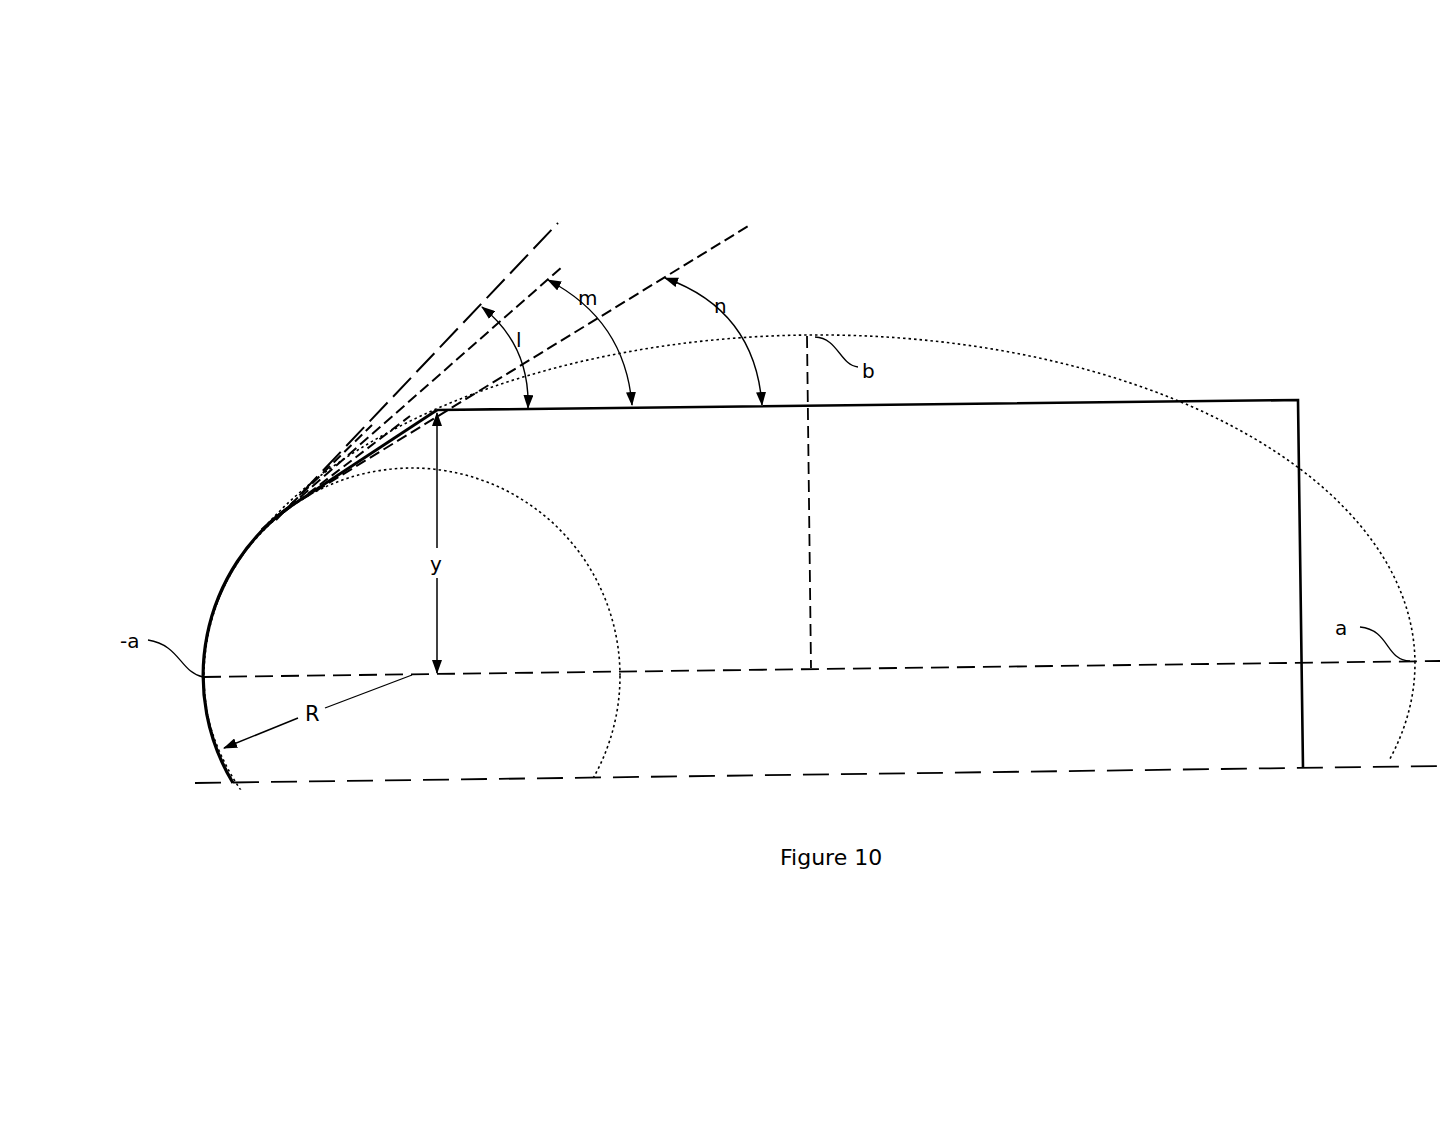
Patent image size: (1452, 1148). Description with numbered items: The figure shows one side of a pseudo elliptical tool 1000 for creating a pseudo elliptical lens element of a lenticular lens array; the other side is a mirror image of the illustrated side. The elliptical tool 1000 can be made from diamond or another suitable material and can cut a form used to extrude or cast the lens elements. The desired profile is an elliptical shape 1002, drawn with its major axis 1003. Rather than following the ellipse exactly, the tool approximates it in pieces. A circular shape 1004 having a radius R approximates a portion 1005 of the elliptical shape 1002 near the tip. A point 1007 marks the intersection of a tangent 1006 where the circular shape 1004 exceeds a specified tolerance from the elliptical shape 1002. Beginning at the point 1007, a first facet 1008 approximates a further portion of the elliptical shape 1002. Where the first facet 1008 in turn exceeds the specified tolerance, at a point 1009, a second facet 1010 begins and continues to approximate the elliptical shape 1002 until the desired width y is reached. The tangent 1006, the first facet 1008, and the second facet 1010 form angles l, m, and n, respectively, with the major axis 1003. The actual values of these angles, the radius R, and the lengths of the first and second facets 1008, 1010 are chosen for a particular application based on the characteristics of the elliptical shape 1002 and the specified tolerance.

The elliptical tool 1000 is at (223, 197).
The elliptical shape 1002 is at (1097, 372).
The major axis 1003 is at (1122, 666).
The circular shape 1004 is at (588, 552).
The portion of the elliptical shape 1005 is at (222, 582).
The tangent 1006 is at (492, 300).
The point 1007 is at (255, 530).
The first facet 1008 is at (313, 473).
The point 1009 is at (333, 460).
The second facet 1010 is at (405, 423).